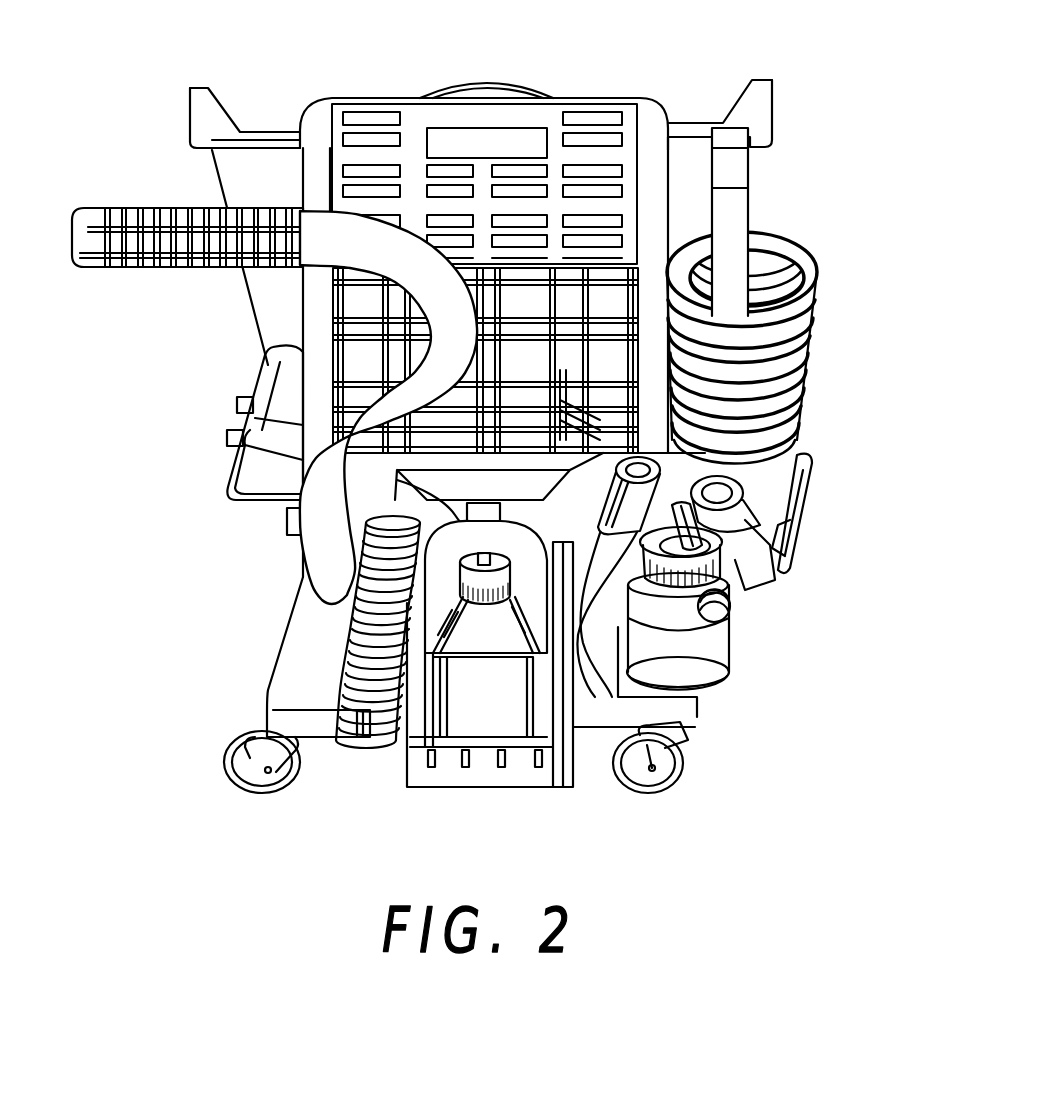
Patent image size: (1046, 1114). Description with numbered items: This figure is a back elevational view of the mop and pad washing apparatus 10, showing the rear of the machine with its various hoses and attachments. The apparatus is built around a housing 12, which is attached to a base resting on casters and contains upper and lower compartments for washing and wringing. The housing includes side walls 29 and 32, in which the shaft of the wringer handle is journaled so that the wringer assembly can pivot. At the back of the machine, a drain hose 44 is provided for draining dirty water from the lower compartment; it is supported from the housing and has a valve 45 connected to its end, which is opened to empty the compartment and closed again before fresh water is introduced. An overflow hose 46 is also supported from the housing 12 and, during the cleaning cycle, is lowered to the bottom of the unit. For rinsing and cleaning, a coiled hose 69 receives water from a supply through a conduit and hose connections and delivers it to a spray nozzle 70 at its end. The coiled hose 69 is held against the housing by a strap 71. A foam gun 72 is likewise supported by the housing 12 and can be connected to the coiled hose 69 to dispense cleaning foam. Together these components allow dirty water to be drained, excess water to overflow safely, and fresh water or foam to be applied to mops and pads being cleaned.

The mop and pad washing apparatus 10 is at (186, 112).
The housing 12 is at (772, 95).
The side wall 29 is at (650, 97).
The side wall 32 is at (326, 104).
The drain hose 44 is at (697, 700).
The valve 45 is at (668, 483).
The overflow hose 46 is at (370, 740).
The coiled hose 69 is at (805, 265).
The spray nozzle 70 is at (763, 573).
The strap 71 is at (735, 195).
The foam gun 72 is at (712, 647).